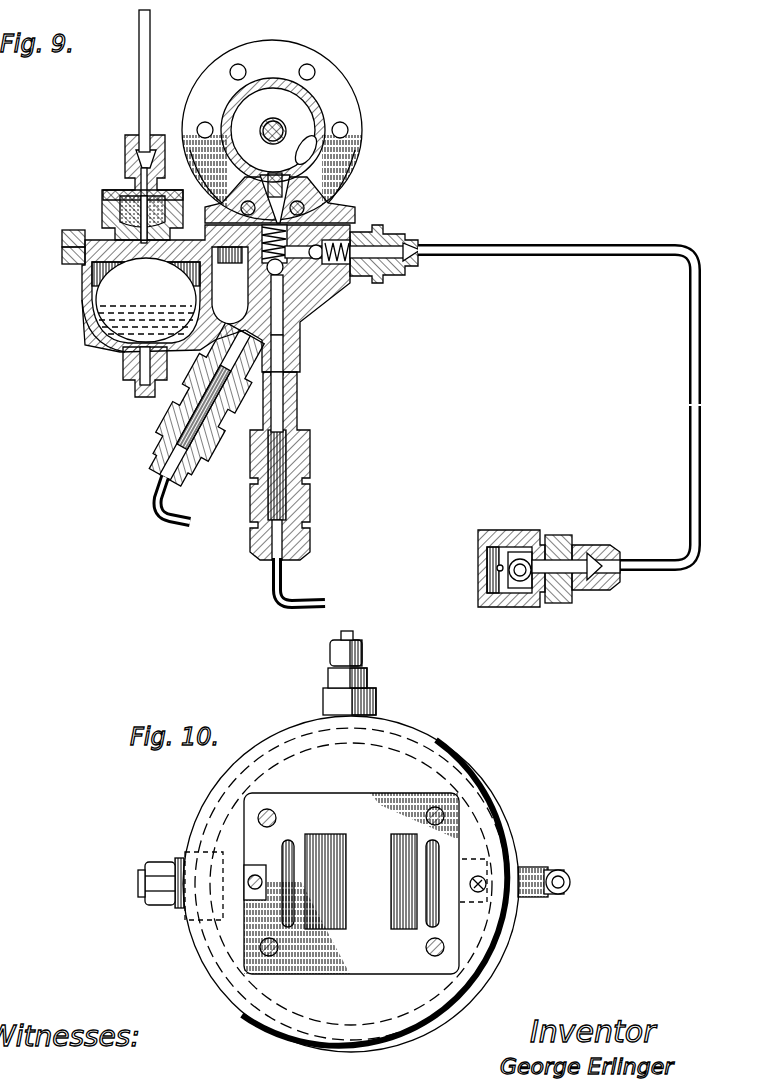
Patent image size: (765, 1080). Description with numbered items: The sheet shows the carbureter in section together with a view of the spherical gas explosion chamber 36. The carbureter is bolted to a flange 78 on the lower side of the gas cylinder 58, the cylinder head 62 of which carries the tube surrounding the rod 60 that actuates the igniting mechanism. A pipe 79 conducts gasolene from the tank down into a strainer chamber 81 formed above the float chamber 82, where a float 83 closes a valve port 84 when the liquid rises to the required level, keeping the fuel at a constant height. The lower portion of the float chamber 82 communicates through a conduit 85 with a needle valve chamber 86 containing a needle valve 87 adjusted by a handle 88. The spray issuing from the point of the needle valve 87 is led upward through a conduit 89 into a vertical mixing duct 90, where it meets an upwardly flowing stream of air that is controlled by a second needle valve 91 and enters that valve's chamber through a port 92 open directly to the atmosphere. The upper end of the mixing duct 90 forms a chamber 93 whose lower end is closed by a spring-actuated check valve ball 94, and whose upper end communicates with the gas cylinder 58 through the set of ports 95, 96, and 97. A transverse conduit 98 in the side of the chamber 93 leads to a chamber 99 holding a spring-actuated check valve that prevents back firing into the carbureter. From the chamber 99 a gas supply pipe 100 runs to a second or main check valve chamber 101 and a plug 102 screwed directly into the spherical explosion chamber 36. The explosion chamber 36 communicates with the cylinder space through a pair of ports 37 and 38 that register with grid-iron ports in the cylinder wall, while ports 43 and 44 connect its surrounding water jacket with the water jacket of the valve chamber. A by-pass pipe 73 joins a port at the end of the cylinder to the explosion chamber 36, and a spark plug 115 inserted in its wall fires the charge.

In FIG. 10, the spherical gas explosion chamber 36 is at (426, 1015).
In FIG. 10, the port 37 is at (325, 849).
In FIG. 10, the port 38 is at (407, 845).
In FIG. 10, the port 43 is at (276, 849).
In FIG. 10, the port 44 is at (430, 877).
In FIG. 9, the gas cylinder 58 is at (288, 103).
In FIG. 9, the rod 60 is at (275, 128).
In FIG. 9, the cylinder head 62 is at (243, 113).
In FIG. 10, the by-pass pipe 73 is at (545, 870).
In FIG. 9, the flange 78 is at (340, 203).
In FIG. 9, the pipe 79 is at (150, 15).
In FIG. 9, the strainer chamber 81 is at (102, 212).
In FIG. 9, the float chamber 82 is at (92, 277).
In FIG. 9, the float 83 is at (90, 307).
In FIG. 9, the valve port 84 is at (117, 230).
In FIG. 9, the conduit 85 is at (203, 347).
In FIG. 9, the needle valve chamber 86 is at (228, 317).
In FIG. 9, the needle valve 87 is at (273, 358).
In FIG. 9, the handle 88 is at (155, 493).
In FIG. 9, the conduit 89 is at (258, 333).
In FIG. 9, the vertical mixing duct 90 is at (272, 288).
In FIG. 9, the second needle valve 91 is at (275, 405).
In FIG. 9, the port 92 is at (297, 385).
In FIG. 9, the chamber 93 is at (339, 176).
In FIG. 9, the spring-actuated check valve ball 94 is at (365, 222).
In FIG. 9, the port 95 is at (206, 176).
In FIG. 9, the port 96 is at (323, 158).
In FIG. 9, the port 97 is at (350, 130).
In FIG. 9, the transverse conduit 98 is at (380, 230).
In FIG. 9, the chamber 99 is at (347, 272).
In FIG. 9, the gas supply pipe 100 is at (561, 244).
In FIG. 10, the gas supply pipe 100 is at (352, 633).
In FIG. 9, the main check valve chamber 101 is at (522, 588).
In FIG. 9, the plug 102 is at (538, 532).
In FIG. 10, the plug 102 is at (376, 700).
In FIG. 10, the spark plug 115 is at (150, 905).